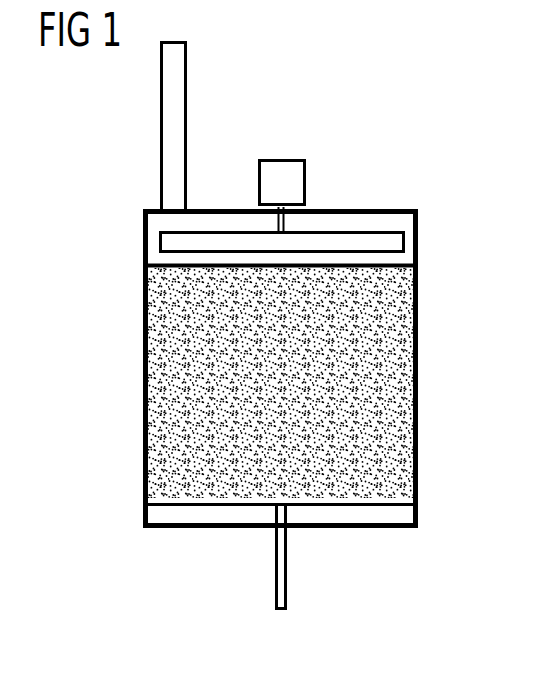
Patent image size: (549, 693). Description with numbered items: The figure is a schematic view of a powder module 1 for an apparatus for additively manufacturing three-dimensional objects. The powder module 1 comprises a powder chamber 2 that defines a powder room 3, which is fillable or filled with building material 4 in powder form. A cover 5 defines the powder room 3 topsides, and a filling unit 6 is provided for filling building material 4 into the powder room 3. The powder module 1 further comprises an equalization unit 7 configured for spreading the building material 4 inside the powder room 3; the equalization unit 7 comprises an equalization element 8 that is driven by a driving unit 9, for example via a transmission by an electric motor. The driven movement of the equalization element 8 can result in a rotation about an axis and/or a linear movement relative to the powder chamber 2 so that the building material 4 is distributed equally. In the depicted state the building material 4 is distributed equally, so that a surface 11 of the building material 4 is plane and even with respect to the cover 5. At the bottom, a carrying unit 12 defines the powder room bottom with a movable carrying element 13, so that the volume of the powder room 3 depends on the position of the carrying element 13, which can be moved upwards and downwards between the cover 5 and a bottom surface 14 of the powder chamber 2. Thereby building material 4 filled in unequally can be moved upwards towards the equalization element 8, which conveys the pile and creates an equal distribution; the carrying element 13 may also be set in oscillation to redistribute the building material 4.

The powder module 1 is at (367, 80).
The powder chamber 2 is at (418, 322).
The powder room 3 is at (382, 385).
The building material 4 is at (147, 383).
The cover 5 is at (330, 208).
The filling unit 6 is at (160, 112).
The equalization unit 7 is at (268, 140).
The equalization element 8 is at (168, 241).
The driving unit 9 is at (281, 158).
The surface 11 is at (361, 264).
The carrying unit 12 is at (238, 556).
The carrying element 13 is at (203, 507).
The bottom surface 14 is at (349, 530).